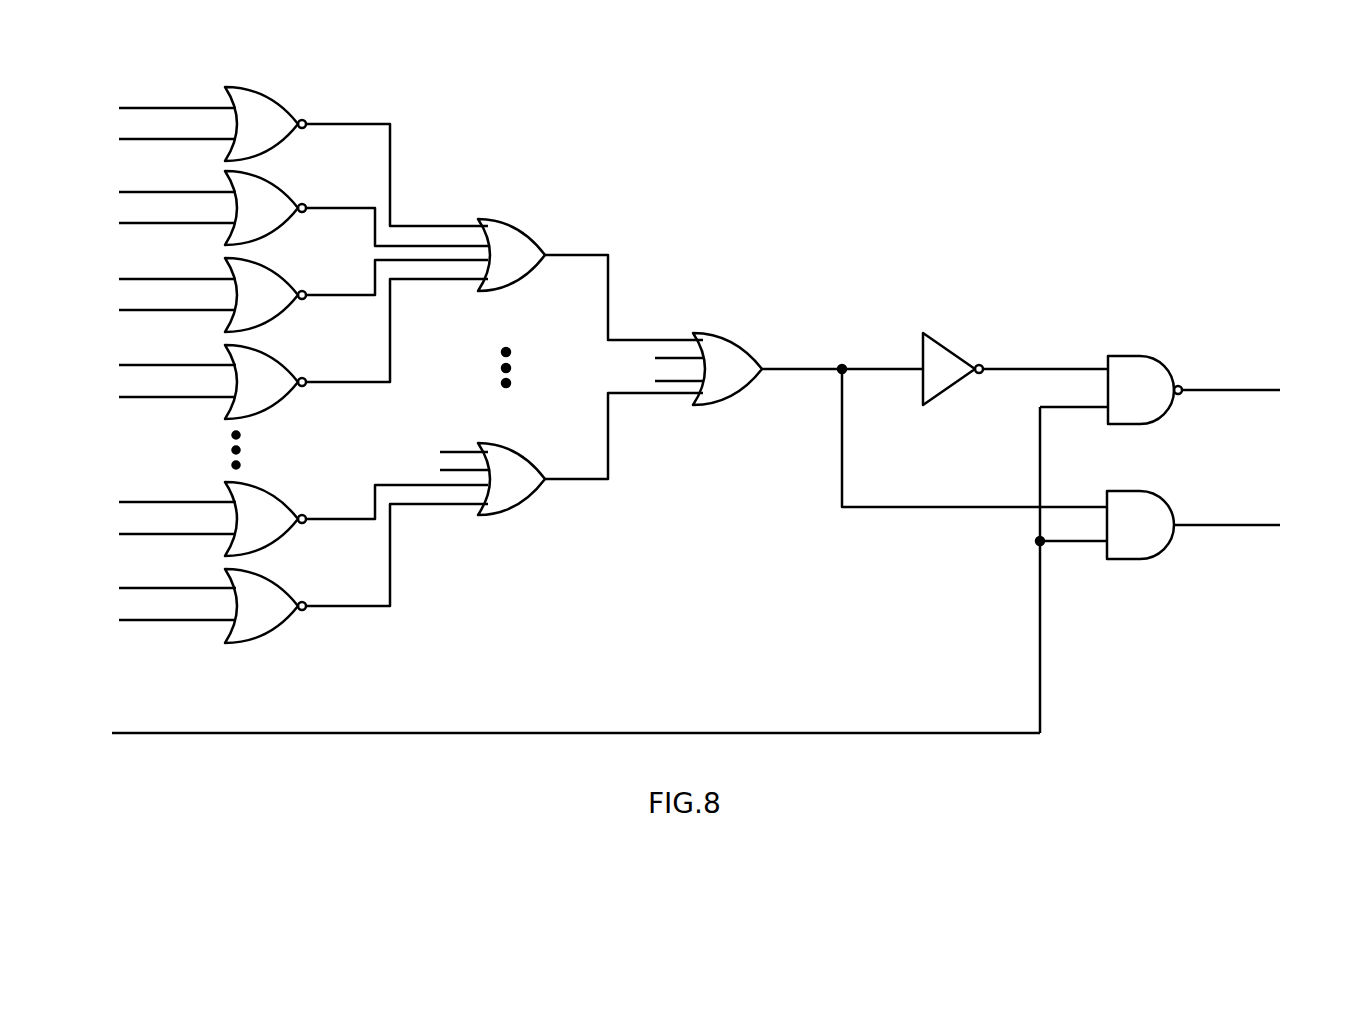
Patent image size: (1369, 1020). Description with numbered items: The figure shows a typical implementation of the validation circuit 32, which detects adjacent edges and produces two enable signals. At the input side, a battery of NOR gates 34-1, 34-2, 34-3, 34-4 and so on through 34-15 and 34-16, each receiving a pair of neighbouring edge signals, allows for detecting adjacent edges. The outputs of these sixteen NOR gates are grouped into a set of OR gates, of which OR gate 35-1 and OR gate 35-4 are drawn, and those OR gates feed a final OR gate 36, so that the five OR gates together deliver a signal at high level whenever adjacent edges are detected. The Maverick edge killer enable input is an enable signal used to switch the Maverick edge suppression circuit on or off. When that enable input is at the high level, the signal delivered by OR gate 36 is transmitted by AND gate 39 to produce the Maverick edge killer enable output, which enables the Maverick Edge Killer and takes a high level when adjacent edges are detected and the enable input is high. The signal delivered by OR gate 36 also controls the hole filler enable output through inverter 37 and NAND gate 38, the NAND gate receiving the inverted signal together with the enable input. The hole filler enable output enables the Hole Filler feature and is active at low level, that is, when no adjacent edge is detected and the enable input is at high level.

The validation circuit 32 is at (774, 179).
The NOR gate 34-1 is at (278, 147).
The NOR gate 34-2 is at (278, 231).
The NOR gate 34-3 is at (278, 318).
The NOR gate 34-4 is at (278, 405).
The NOR gate 34-15 is at (278, 542).
The NOR gate 34-16 is at (278, 629).
The OR gate 35-1 is at (527, 276).
The OR gate 35-4 is at (527, 500).
The OR gate 36 is at (743, 392).
The inverter 37 is at (955, 385).
The NAND gate 38 is at (1167, 409).
The AND gate 39 is at (1167, 544).